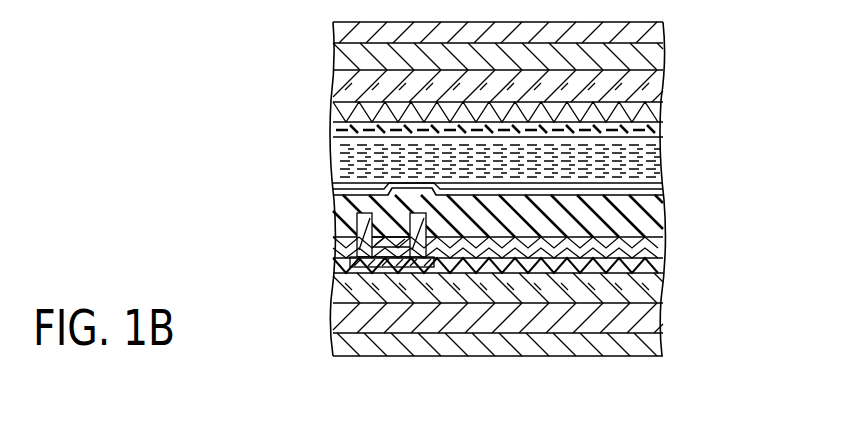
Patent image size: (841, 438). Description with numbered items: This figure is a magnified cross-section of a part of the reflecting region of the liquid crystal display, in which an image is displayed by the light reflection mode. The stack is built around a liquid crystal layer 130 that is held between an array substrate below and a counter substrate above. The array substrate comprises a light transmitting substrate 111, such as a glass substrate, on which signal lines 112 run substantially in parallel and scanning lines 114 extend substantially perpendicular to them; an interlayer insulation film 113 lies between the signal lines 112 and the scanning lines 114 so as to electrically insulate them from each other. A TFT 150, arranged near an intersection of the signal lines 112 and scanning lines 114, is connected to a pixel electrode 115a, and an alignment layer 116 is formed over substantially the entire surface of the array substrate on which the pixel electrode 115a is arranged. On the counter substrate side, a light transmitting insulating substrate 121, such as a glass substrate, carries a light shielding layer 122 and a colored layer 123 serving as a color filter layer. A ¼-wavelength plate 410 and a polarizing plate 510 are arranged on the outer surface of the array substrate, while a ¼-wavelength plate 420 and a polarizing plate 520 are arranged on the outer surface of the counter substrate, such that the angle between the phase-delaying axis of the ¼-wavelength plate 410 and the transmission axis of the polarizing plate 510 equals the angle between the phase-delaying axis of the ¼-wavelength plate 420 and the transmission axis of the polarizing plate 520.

The polarizing plate 520 is at (665, 34).
The ¼-wavelength plate 420 is at (335, 46).
The light transmitting insulating substrate 121 is at (335, 72).
The light shielding layer 122 is at (346, 108).
The colored layer (color filter layer) 123 is at (665, 121).
The liquid crystal layer 130 is at (336, 156).
The alignment layer 116 is at (664, 193).
The pixel electrode 115a is at (665, 215).
The interlayer insulation film 113 is at (665, 248).
The signal line 112 is at (356, 228).
The scanning line 114 is at (350, 261).
The light transmitting substrate 111 is at (335, 290).
The ¼-wavelength plate 410 is at (334, 320).
The polarizing plate 510 is at (657, 341).
The TFT (thin film transistor) 150 is at (414, 280).